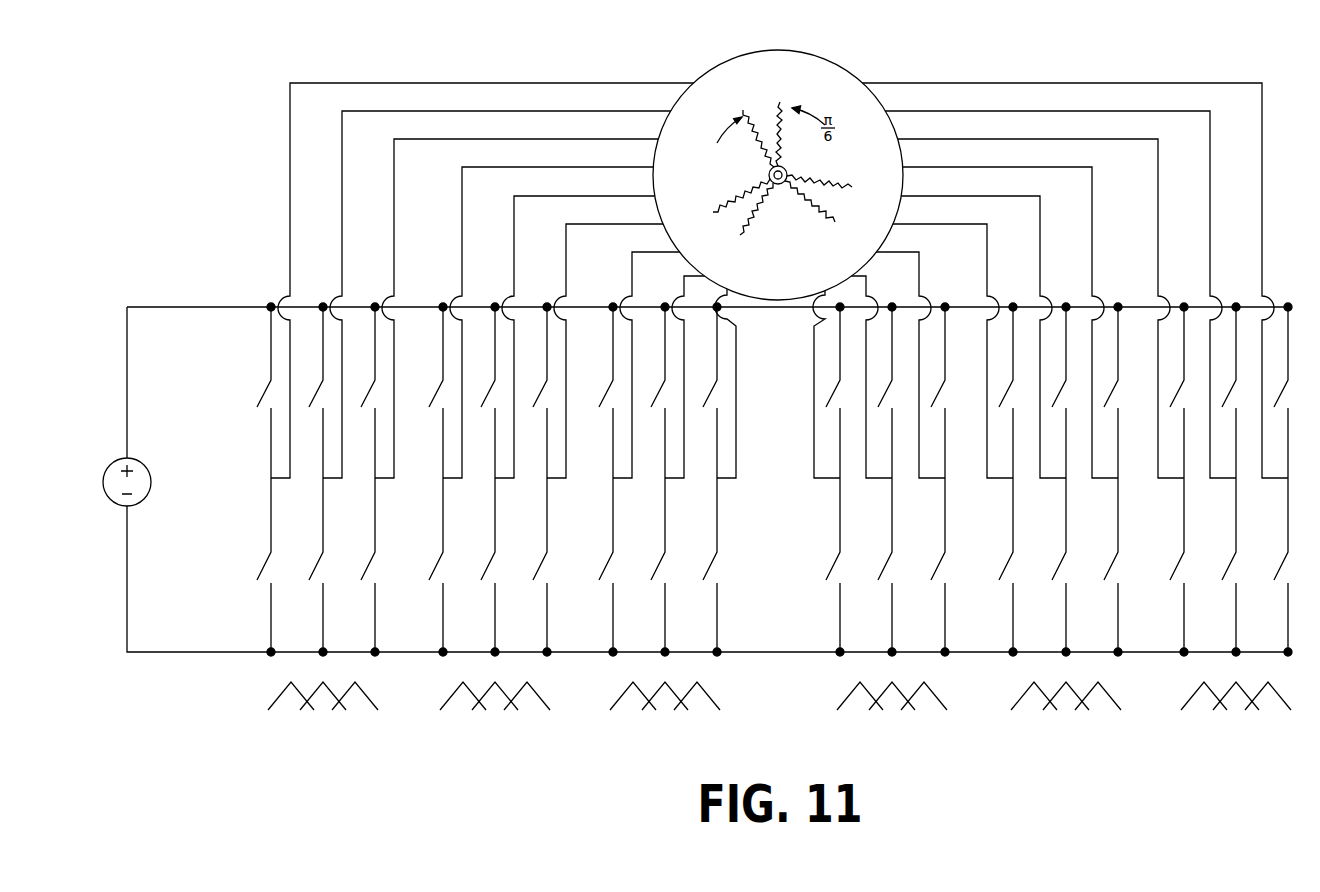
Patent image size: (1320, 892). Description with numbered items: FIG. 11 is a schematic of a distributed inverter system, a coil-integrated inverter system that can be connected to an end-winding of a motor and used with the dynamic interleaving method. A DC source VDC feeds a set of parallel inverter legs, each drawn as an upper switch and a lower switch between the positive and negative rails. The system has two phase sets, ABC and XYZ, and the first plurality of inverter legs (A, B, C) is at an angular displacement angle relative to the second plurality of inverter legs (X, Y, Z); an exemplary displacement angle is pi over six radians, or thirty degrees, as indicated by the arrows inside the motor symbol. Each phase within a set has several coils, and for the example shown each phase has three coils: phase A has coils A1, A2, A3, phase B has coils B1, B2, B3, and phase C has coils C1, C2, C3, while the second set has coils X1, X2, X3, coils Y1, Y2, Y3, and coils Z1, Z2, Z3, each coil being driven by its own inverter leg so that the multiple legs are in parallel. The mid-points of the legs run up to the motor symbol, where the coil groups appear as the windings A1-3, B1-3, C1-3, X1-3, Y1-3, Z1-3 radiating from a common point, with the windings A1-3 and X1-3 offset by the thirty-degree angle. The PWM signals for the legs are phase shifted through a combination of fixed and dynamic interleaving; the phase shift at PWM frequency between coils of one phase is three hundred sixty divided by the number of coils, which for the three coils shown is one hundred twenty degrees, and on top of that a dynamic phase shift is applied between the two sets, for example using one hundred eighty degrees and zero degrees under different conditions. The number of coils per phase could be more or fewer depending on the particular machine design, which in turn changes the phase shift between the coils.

The DC voltage source VDC is at (149, 482).
The coil A1 is at (282, 479).
The coil A2 is at (334, 479).
The coil A3 is at (386, 479).
The switch leg B1 is at (454, 479).
The switch leg B2 is at (506, 479).
The switch leg B3 is at (558, 479).
The switch leg C1 is at (624, 479).
The switch leg C2 is at (676, 479).
The switch leg C3 is at (728, 479).
The switch leg X1 is at (824, 479).
The switch leg X2 is at (876, 479).
The switch leg X3 is at (929, 479).
The switch leg Y1 is at (998, 479).
The switch leg Y2 is at (1051, 479).
The switch leg Y3 is at (1103, 479).
The switch leg Z1 is at (1168, 479).
The switch leg Z2 is at (1220, 479).
The switch leg Z3 is at (1272, 479).
The stator winding A1-3 is at (785, 119).
The stator winding B1-3 is at (716, 197).
The stator winding C1-3 is at (825, 221).
The stator winding X1-3 is at (740, 120).
The stator winding Y1-3 is at (753, 229).
The stator winding Z1-3 is at (842, 177).